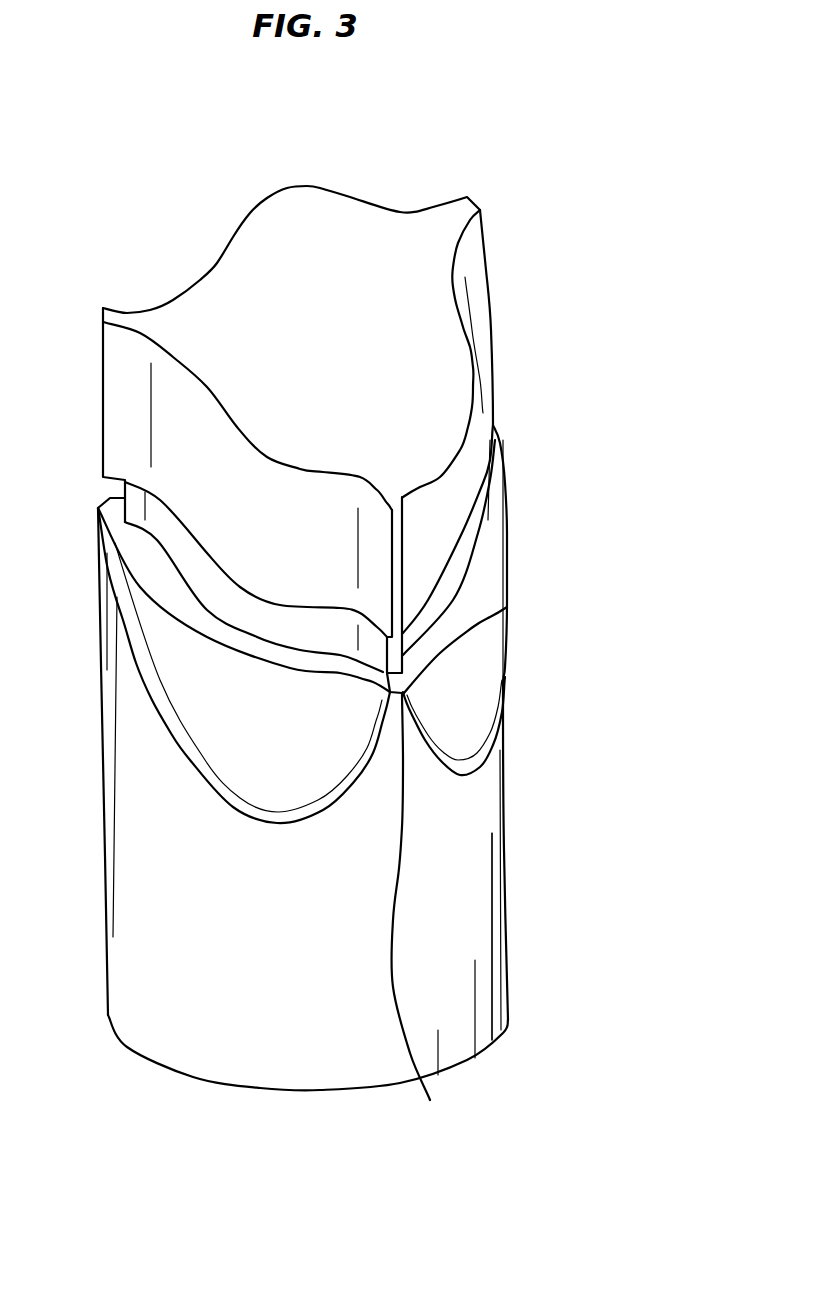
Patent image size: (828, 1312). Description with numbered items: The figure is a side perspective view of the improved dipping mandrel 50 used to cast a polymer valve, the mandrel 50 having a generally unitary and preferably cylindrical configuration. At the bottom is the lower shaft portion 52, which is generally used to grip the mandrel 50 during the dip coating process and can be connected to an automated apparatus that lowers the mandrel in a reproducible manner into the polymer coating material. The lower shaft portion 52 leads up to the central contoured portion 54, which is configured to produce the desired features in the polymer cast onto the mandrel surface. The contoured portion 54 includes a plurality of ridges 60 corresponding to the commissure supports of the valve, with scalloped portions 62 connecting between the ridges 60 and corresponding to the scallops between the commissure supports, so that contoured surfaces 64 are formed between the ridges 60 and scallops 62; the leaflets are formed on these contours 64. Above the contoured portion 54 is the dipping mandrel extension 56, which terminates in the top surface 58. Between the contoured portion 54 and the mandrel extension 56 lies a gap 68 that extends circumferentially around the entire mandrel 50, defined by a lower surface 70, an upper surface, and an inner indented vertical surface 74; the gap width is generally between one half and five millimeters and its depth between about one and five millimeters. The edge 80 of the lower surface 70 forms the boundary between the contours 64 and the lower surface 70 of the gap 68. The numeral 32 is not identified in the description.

The mandrel 50 is at (590, 668).
The lower shaft portion 52 is at (455, 920).
The contoured portion 54 is at (440, 775).
The dipping mandrel extension 56 is at (482, 295).
The top surface 58 is at (388, 237).
The ridges 60 is at (430, 1100).
The scalloped portions 62 is at (235, 808).
The contoured surfaces 64 is at (303, 772).
The gap 68 is at (458, 600).
The lower surface 70 is at (482, 557).
The inner indented vertical surface 74 is at (503, 668).
The edge 80 is at (477, 603).
The ring outer rim 32 is at (483, 500).